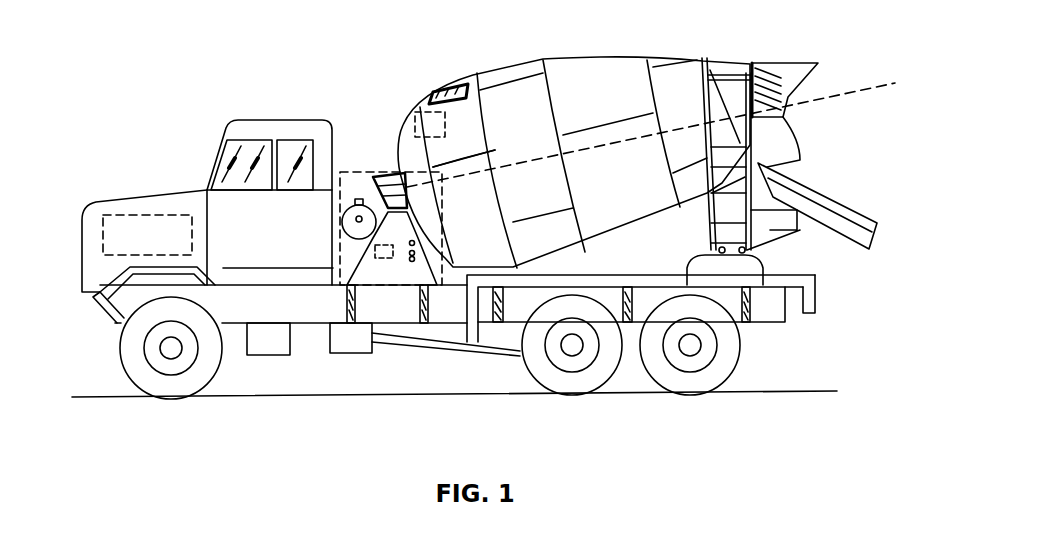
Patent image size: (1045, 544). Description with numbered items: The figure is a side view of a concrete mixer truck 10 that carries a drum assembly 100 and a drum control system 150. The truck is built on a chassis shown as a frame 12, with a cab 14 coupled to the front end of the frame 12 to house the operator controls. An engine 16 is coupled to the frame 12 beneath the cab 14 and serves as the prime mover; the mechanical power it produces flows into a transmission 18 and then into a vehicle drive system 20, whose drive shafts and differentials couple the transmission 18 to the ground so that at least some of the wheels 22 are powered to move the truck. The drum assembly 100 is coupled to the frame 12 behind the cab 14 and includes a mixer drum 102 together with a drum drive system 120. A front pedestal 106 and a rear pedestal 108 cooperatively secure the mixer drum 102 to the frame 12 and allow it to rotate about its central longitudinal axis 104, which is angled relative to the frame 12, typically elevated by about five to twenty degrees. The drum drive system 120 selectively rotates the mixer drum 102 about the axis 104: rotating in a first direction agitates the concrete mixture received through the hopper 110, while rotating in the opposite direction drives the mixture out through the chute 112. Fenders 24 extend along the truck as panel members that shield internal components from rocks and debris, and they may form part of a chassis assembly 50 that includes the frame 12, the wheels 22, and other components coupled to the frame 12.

The concrete mixer truck 10 is at (178, 94).
The frame 12 is at (393, 312).
The cab 14 is at (185, 197).
The engine 16 is at (116, 222).
The transmission 18 is at (357, 348).
The vehicle drive system 20 is at (515, 355).
The wheels 22 is at (127, 365).
The fenders 24 is at (92, 295).
The chassis assembly 50 is at (880, 265).
The drum assembly 100 is at (520, 53).
The mixer drum 102 is at (620, 67).
The axis 104 is at (852, 92).
The front pedestal 106 is at (410, 226).
The rear pedestal 108 is at (703, 253).
The hopper 110 is at (797, 62).
The chute 112 is at (855, 208).
The drum drive system 120 is at (373, 170).
The drum control system 150 is at (343, 230).